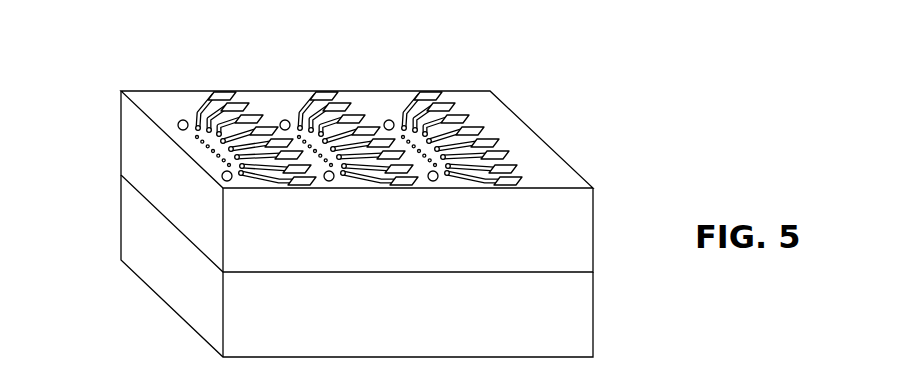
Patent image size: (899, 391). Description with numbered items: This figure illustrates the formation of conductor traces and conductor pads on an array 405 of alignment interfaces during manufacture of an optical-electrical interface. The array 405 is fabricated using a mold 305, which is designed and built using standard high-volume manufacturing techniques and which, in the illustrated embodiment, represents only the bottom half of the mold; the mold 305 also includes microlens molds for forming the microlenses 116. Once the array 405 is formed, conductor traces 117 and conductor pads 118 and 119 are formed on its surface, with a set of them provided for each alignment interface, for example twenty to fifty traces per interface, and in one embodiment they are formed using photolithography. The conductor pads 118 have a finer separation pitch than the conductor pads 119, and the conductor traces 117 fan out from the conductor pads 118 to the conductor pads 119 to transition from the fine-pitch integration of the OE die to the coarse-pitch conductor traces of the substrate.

The array of alignment interfaces 405 is at (121, 128).
The mold 305 is at (121, 220).
The conductor pads 118 is at (198, 126).
The conductor traces 117 is at (299, 126).
The conductor pads 119 is at (405, 125).
The microlenses 116 is at (396, 145).